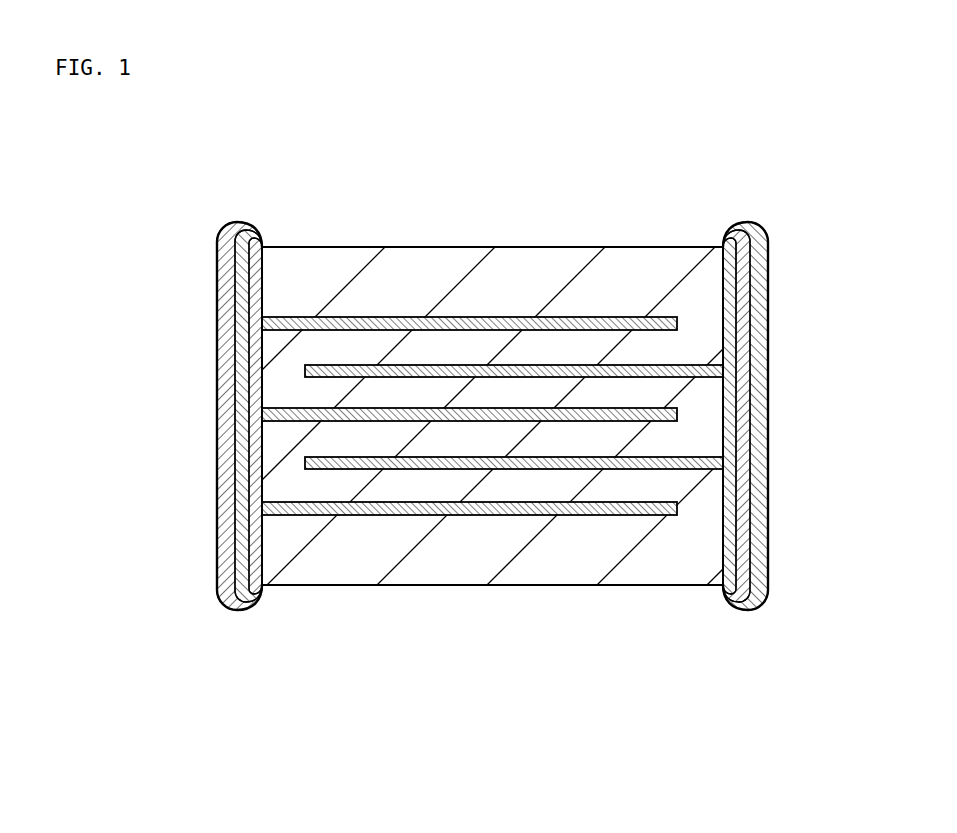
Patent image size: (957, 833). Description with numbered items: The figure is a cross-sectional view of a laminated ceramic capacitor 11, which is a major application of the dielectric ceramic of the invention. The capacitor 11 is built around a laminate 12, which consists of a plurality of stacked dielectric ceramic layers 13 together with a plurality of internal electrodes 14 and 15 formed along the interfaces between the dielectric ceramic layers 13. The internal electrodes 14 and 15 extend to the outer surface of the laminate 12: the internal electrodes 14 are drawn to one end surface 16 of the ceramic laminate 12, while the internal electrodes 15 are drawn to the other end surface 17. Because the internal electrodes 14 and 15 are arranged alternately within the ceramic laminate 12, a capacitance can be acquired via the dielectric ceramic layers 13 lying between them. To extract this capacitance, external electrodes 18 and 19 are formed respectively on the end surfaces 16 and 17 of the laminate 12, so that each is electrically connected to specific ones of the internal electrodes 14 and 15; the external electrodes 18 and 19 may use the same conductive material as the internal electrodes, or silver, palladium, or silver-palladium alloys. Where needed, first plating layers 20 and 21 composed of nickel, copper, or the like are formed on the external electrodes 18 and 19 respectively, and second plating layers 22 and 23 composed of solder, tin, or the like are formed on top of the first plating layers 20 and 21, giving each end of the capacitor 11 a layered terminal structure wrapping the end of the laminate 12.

The laminated ceramic capacitor 11 is at (125, 148).
The laminate 12 is at (537, 588).
The dielectric ceramic layers 13 is at (538, 490).
The internal electrodes 14 is at (393, 502).
The internal electrodes 15 is at (668, 457).
The end surface 16 is at (228, 377).
The end surface 17 is at (758, 320).
The external electrode 18 is at (236, 417).
The external electrode 19 is at (750, 370).
The first plating layer 20 is at (243, 462).
The first plating layer 21 is at (742, 410).
The second plating layer 22 is at (250, 510).
The second plating layer 23 is at (732, 457).